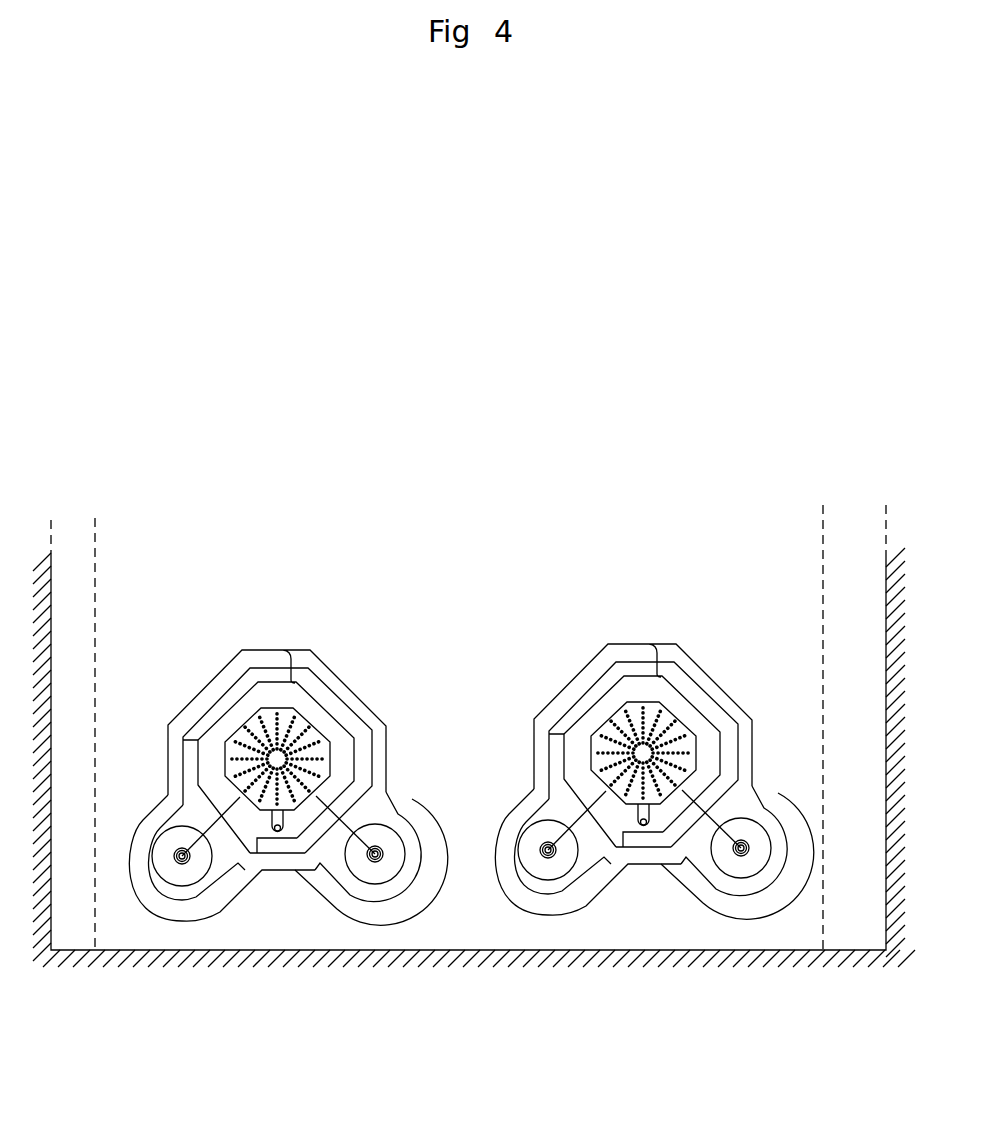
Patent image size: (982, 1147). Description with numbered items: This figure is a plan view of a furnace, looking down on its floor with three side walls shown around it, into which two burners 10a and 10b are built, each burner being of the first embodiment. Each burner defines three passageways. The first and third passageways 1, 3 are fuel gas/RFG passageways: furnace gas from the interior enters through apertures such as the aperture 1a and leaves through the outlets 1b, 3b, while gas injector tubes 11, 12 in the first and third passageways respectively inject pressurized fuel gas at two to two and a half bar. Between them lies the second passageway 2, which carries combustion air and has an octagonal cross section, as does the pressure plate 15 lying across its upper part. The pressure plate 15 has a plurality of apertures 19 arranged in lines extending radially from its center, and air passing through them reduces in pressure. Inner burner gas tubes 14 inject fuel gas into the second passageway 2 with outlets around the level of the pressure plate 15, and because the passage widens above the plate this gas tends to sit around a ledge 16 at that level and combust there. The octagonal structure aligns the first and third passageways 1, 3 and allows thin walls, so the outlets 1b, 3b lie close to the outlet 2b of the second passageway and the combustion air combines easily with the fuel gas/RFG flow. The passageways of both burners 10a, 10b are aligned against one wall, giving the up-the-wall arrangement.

The burner 10a is at (262, 623).
The burner 10b is at (629, 623).
The first passageway 1 is at (153, 803).
The aperture 1a is at (563, 866).
The outlet 1b is at (195, 870).
The second passageway 2 is at (328, 663).
The outlet 2b is at (298, 695).
The third passageway 3 is at (398, 793).
The outlet 3b is at (388, 843).
The gas injector tube 11 is at (182, 856).
The gas injector tube 12 is at (375, 854).
The inner burner gas tube 14 is at (277, 832).
The pressure plate 15 is at (255, 710).
The ledge 16 is at (353, 728).
The apertures 19 is at (230, 738).